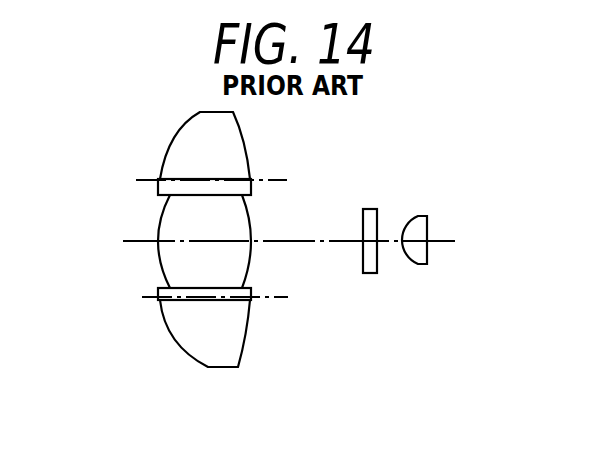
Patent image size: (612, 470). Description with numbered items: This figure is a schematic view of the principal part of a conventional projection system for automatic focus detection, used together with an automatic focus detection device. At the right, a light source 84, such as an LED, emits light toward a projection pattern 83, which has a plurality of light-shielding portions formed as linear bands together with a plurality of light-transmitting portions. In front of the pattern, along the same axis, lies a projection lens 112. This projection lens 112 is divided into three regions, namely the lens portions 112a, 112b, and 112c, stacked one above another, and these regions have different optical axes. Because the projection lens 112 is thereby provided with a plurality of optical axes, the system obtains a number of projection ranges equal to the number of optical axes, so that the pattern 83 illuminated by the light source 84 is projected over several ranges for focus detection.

The projection lens 112 is at (175, 267).
The lens portion 112a is at (168, 152).
The lens portion 112b is at (157, 222).
The lens portion 112c is at (173, 335).
The projection pattern 83 is at (375, 274).
The light source 84 is at (428, 253).